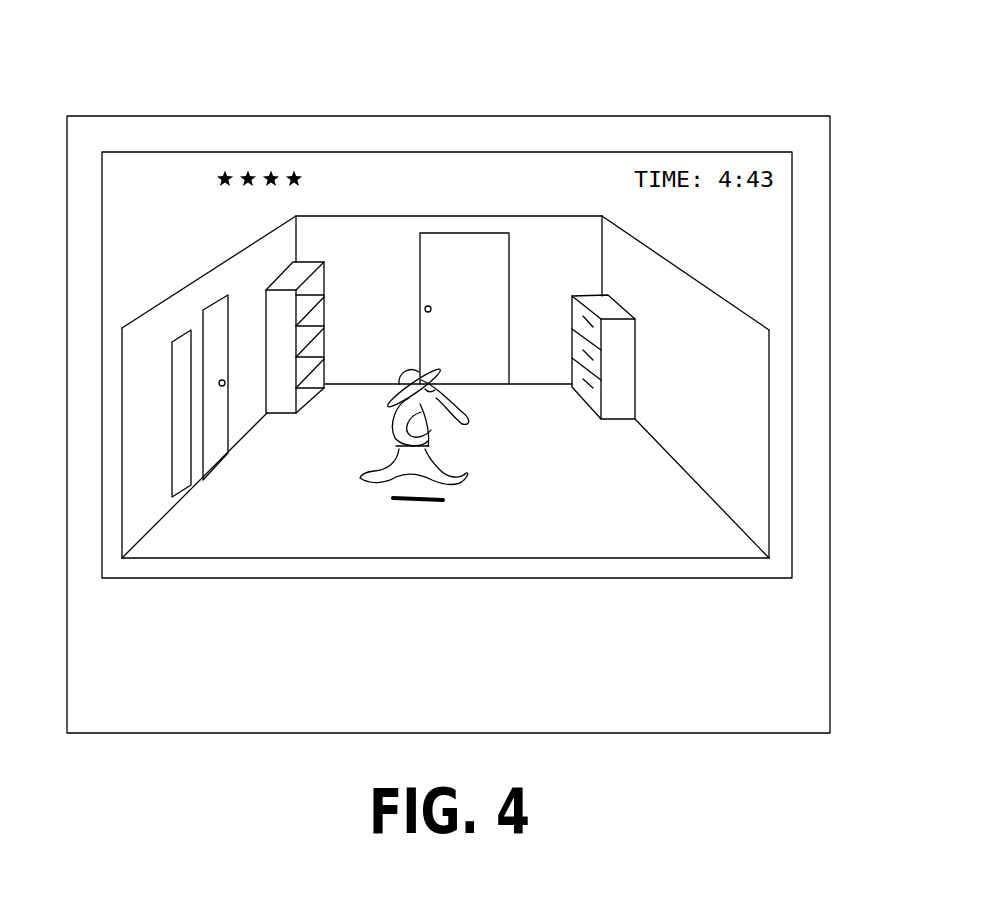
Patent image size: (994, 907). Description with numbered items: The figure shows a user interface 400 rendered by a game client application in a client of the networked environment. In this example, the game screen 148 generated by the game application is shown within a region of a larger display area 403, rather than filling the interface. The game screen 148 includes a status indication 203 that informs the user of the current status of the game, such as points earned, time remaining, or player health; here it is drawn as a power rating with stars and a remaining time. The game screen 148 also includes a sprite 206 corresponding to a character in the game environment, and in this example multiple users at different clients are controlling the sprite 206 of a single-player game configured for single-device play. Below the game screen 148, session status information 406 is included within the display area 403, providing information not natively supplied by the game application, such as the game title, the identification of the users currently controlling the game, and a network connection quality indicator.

The user interface 400 is at (804, 63).
The display area 403 is at (448, 133).
The status indication 203 is at (265, 170).
The game screen 148 is at (765, 261).
The sprite 206 is at (393, 478).
The session status information 406 is at (516, 693).